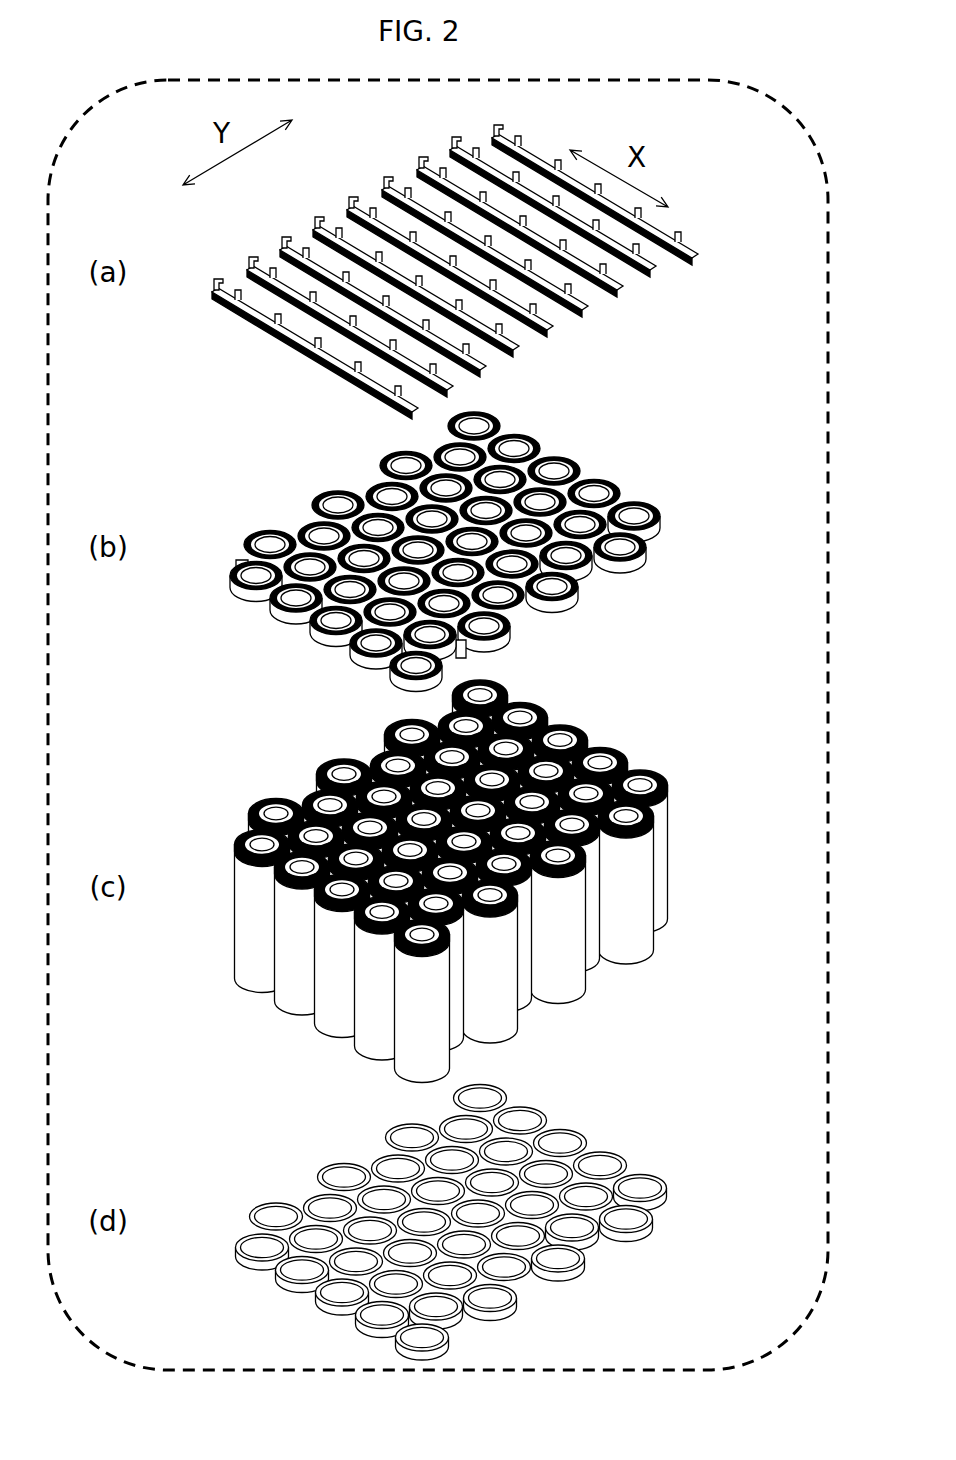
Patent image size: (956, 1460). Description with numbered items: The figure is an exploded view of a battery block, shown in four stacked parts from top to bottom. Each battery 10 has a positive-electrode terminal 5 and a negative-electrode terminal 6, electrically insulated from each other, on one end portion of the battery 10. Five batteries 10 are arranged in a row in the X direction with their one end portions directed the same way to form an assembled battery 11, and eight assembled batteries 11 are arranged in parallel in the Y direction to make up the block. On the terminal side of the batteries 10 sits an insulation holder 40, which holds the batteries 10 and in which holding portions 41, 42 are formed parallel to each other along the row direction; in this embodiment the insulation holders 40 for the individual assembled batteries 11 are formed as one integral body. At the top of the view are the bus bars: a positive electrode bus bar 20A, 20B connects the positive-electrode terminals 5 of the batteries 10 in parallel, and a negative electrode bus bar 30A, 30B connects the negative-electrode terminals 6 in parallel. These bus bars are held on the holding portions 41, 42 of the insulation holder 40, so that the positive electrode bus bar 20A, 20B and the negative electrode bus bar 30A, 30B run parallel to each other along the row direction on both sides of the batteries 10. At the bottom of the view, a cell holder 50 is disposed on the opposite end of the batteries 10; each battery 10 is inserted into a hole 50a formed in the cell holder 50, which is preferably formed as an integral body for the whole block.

The positive electrode bus bar 20A is at (690, 255).
The positive electrode bus bar 20B is at (654, 276).
The negative electrode bus bar 30A is at (417, 168).
The negative electrode bus bar 30B is at (452, 148).
The insulation holder 40 is at (403, 554).
The holding portion 41 is at (465, 652).
The holding portion 42 is at (242, 567).
The battery 10 is at (409, 882).
The assembled battery 11 is at (428, 998).
The positive-electrode terminal 5 is at (243, 800).
The negative-electrode terminal 6 is at (245, 838).
The cell holder 50 is at (407, 1223).
The hole 50a is at (262, 1245).